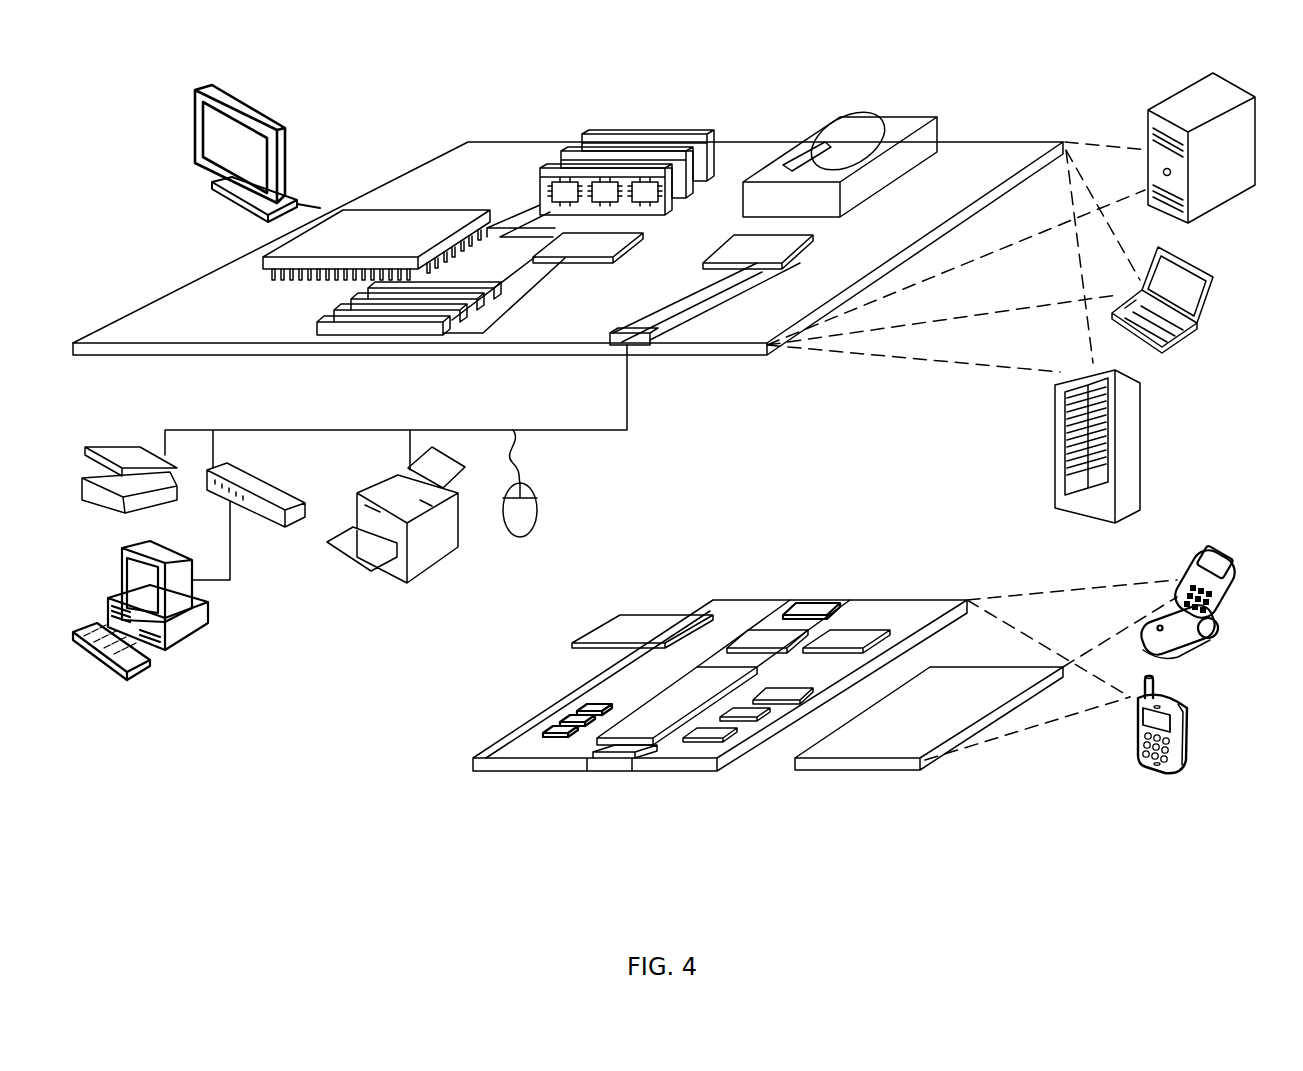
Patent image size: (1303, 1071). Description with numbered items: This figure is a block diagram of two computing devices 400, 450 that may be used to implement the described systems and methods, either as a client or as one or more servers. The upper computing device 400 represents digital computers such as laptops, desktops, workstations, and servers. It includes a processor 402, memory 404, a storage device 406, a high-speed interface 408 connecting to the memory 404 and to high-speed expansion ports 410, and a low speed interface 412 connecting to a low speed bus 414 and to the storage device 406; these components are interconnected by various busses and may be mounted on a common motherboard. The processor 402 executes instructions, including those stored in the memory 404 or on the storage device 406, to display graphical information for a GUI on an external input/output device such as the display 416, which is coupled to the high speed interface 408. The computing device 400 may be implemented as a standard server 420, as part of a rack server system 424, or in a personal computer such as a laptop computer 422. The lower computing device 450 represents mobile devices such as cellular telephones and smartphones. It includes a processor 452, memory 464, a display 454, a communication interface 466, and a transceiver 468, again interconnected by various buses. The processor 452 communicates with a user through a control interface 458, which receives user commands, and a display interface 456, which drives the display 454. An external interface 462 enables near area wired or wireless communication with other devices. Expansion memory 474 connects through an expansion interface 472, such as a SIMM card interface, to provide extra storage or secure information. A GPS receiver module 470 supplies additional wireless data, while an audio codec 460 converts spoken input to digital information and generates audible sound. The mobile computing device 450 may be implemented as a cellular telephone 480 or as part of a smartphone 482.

The computing device 400 is at (395, 111).
The processor 402 is at (270, 262).
The memory 404 is at (600, 162).
The storage device 406 is at (828, 128).
The high-speed interface 408 is at (568, 243).
The high-speed expansion ports 410 is at (320, 327).
The low speed interface 412 is at (740, 250).
The low speed bus 414 is at (642, 347).
The display 416 is at (200, 92).
The standard server 420 is at (1147, 128).
The laptop computer 422 is at (1224, 277).
The rack server system 424 is at (1056, 472).
The computing device 450 is at (446, 778).
The processor 452 is at (650, 735).
The display 454 is at (882, 745).
The display interface 456 is at (716, 740).
The control interface 458 is at (752, 720).
The audio codec 460 is at (778, 700).
The external interface 462 is at (612, 760).
The memory 464 is at (565, 730).
The communication interface 466 is at (770, 640).
The transceiver 468 is at (845, 640).
The GPS receiver module 470 is at (822, 605).
The expansion interface 472 is at (700, 612).
The expansion memory 474 is at (628, 615).
The cellular telephone 480 is at (1192, 560).
The smartphone 482 is at (1135, 738).